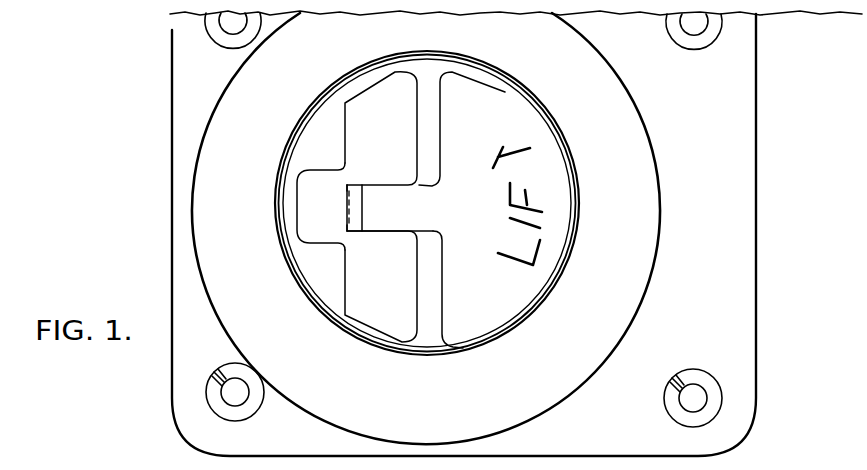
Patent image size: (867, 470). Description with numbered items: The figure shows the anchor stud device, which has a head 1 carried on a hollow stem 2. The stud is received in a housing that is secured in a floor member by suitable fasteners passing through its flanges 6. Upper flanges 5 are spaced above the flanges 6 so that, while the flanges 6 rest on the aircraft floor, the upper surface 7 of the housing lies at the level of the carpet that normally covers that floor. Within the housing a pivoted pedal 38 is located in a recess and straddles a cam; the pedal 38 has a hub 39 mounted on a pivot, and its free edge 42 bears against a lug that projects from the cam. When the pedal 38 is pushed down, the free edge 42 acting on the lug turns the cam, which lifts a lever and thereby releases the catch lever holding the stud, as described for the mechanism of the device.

The head 1 is at (312, 271).
The hollow stem 2 is at (285, 207).
The upper flanges 5 is at (648, 257).
The flanges 6 is at (748, 318).
The upper surface 7 is at (605, 306).
The pivoted pedal 38 is at (383, 328).
The hub 39 is at (300, 232).
The free edge 42 is at (420, 138).